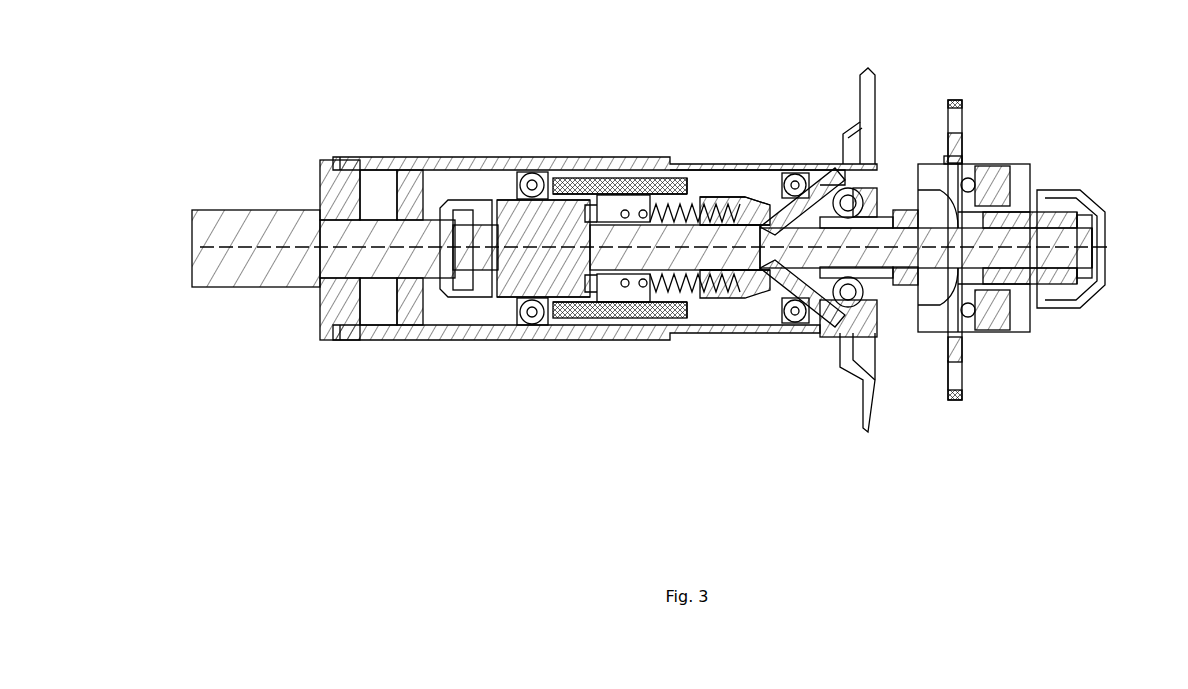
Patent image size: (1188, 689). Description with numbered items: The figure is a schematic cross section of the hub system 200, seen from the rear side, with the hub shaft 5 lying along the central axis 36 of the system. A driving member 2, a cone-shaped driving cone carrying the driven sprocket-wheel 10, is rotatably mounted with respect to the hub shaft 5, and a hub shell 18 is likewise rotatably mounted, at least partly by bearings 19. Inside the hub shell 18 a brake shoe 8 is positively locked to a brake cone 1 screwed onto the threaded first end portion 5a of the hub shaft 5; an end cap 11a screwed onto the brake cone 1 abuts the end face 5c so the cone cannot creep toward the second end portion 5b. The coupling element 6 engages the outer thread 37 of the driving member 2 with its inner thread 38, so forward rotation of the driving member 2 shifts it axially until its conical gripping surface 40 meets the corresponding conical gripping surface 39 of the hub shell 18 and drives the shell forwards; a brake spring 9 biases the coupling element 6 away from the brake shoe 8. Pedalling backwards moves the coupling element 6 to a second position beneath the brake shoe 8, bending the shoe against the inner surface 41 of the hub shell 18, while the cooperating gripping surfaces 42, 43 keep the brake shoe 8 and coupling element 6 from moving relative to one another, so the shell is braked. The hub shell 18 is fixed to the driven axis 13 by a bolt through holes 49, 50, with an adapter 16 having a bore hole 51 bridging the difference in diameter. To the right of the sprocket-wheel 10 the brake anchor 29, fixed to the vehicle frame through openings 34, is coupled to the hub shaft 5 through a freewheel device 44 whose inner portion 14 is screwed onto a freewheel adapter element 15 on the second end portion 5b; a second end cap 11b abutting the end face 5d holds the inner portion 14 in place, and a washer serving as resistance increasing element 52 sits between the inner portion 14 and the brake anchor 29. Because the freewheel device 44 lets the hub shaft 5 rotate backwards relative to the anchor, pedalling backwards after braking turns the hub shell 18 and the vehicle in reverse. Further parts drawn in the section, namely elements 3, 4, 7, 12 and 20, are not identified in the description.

The brake cone 1 is at (562, 213).
The driving member 2 is at (848, 175).
The bearing 3 is at (849, 203).
The bearing retainer 4 is at (903, 215).
The hub shaft 5 is at (608, 240).
The first end portion 5a is at (527, 258).
The second end portion 5b is at (1052, 238).
The end face 5c is at (450, 244).
The end face 5d is at (1092, 258).
The coupling element 6 is at (706, 196).
The conical disc 7 is at (822, 190).
The brake shoe 8 is at (629, 198).
The brake spring 9 is at (668, 202).
The driven sprocket-wheel 10 is at (868, 90).
The end cap 11a is at (498, 203).
The second end cap 11b is at (1068, 200).
The seal 12 is at (590, 193).
The driven axis 13 is at (319, 231).
The inner portion of the freewheel device 14 is at (1010, 203).
The freewheel adapter element 15 is at (1030, 215).
The adapter 16 is at (337, 202).
The hub shell 18 is at (737, 172).
The bearings 19 is at (532, 185).
The bearing housing 20 is at (875, 217).
The brake anchor 29 is at (957, 355).
The openings 34 is at (944, 377).
The central axis of the hub system 36 is at (1048, 276).
The outer thread 37 is at (701, 210).
The inner thread 38 is at (728, 180).
The conical gripping surface of the hub shell 39 is at (748, 197).
The conical gripping surface of the coupling element 40 is at (714, 188).
The inner surface of the hub shell 41 is at (622, 198).
The gripping surface 42 is at (648, 226).
The gripping surface 43 is at (667, 298).
The freewheel device 44 is at (995, 183).
The hole in the driven axis 49 is at (376, 268).
The hole in the hub shell 50 is at (370, 163).
The bore hole 51 is at (376, 190).
The resistance increasing element 52 is at (963, 158).
The hub system 200 is at (452, 368).